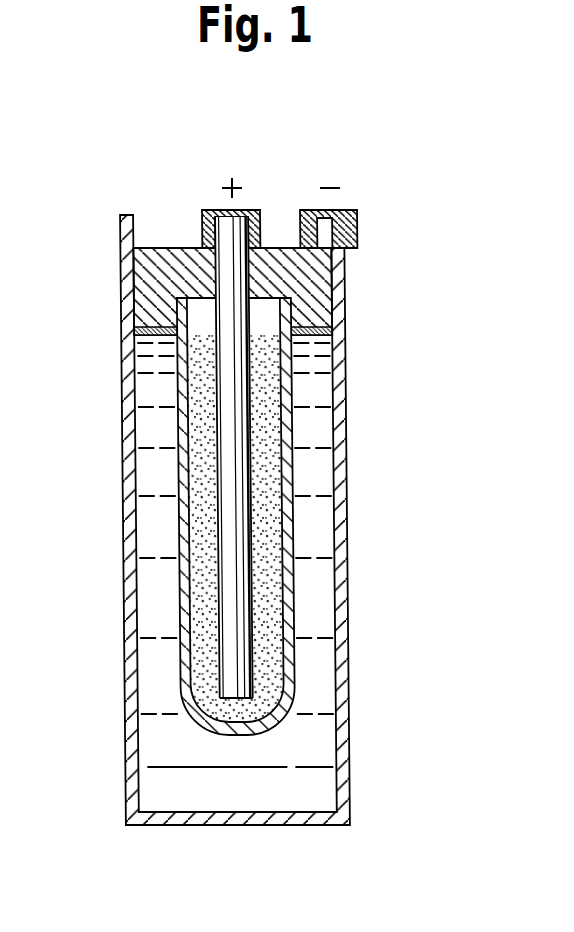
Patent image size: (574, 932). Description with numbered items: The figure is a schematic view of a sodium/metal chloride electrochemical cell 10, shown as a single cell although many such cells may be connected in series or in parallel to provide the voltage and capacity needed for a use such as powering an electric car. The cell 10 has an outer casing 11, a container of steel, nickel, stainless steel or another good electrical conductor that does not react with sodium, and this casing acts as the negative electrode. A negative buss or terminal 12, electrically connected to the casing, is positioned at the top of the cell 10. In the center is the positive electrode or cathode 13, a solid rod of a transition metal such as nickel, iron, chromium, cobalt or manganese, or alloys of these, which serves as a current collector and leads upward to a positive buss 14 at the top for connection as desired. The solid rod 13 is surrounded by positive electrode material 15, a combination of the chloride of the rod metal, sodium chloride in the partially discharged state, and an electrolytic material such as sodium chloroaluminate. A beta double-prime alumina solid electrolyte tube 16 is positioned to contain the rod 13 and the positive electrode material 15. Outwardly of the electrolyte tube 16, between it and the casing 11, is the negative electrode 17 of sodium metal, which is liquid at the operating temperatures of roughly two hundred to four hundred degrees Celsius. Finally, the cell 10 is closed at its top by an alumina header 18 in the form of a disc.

The electrochemical cell 10 is at (239, 478).
The outer casing 11 is at (116, 550).
The negative buss or terminal 12 is at (352, 210).
The positive electrode or cathode 13 is at (229, 426).
The positive buss 14 is at (202, 215).
The positive electrode material 15 is at (263, 397).
The beta'' alumina electrolyte solid tube 16 is at (288, 605).
The negative electrode 17 is at (160, 729).
The alumina header 18 is at (317, 278).